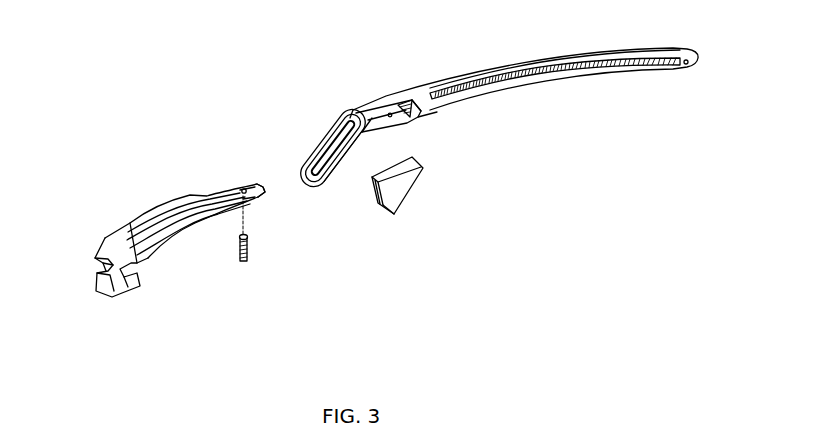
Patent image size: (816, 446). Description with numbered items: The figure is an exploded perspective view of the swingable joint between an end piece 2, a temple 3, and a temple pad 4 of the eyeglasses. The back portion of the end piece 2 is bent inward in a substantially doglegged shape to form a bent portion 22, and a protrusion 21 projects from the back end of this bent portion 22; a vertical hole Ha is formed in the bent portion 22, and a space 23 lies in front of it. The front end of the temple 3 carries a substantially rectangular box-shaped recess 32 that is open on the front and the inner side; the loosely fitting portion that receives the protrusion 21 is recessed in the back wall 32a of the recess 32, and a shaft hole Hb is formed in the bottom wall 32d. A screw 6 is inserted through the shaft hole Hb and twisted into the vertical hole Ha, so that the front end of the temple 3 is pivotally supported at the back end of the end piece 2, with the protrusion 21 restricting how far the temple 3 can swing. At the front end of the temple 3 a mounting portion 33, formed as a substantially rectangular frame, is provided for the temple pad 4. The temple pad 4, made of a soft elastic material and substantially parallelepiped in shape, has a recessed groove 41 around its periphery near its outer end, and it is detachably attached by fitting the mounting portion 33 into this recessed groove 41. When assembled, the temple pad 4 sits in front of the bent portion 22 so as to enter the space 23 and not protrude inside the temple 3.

The end piece 2 is at (171, 234).
The protrusion 21 is at (257, 183).
The bent portion 22 is at (207, 221).
The space 23 is at (159, 245).
The vertical hole Ha is at (242, 186).
The screw 6 is at (250, 250).
The temple 3 is at (545, 56).
The recess 32 is at (410, 102).
The back wall 32a is at (416, 113).
The bottom wall 32d is at (364, 138).
The shaft hole Hb is at (405, 122).
The mounting portion 33 is at (318, 128).
The temple pad 4 is at (415, 231).
The recessed groove 41 is at (376, 210).